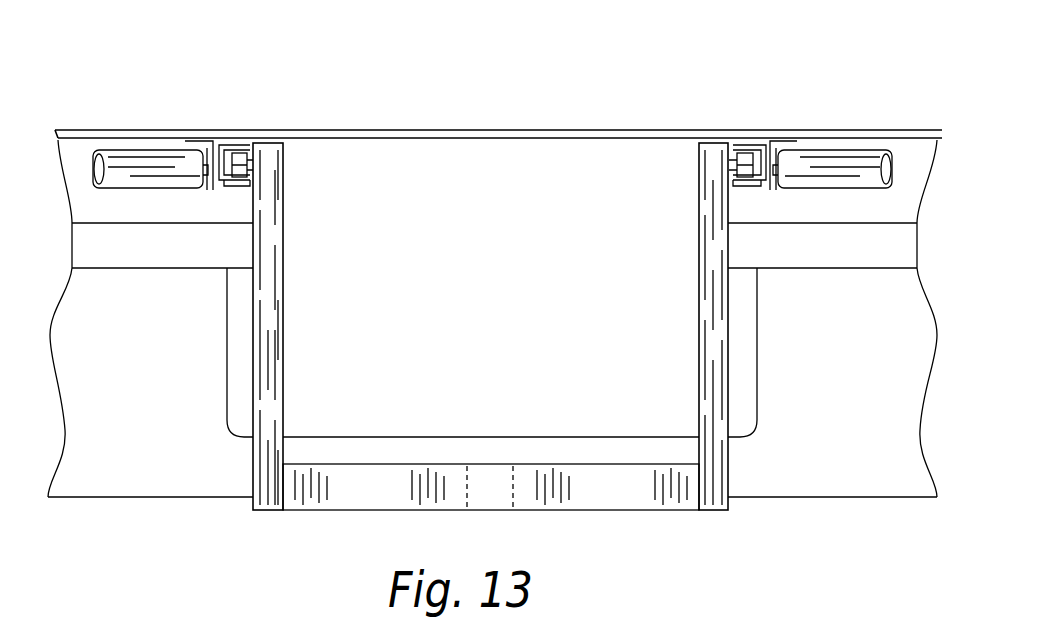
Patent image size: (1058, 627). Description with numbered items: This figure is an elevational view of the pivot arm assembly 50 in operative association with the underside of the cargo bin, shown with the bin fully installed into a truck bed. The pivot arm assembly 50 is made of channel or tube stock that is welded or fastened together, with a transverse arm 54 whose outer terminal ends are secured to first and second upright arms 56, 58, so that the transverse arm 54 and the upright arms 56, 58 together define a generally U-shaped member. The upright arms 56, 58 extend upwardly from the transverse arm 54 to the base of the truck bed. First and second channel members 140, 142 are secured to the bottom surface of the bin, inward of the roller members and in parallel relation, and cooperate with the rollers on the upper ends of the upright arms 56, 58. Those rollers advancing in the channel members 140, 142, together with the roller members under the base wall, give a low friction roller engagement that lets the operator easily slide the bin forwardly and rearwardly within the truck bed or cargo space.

The pivot arm assembly 50 is at (208, 401).
The transverse arm 54 is at (453, 464).
The first upright arm 56 is at (708, 314).
The second upright arm 58 is at (283, 368).
The first channel member 140 is at (758, 185).
The second channel member 142 is at (232, 184).